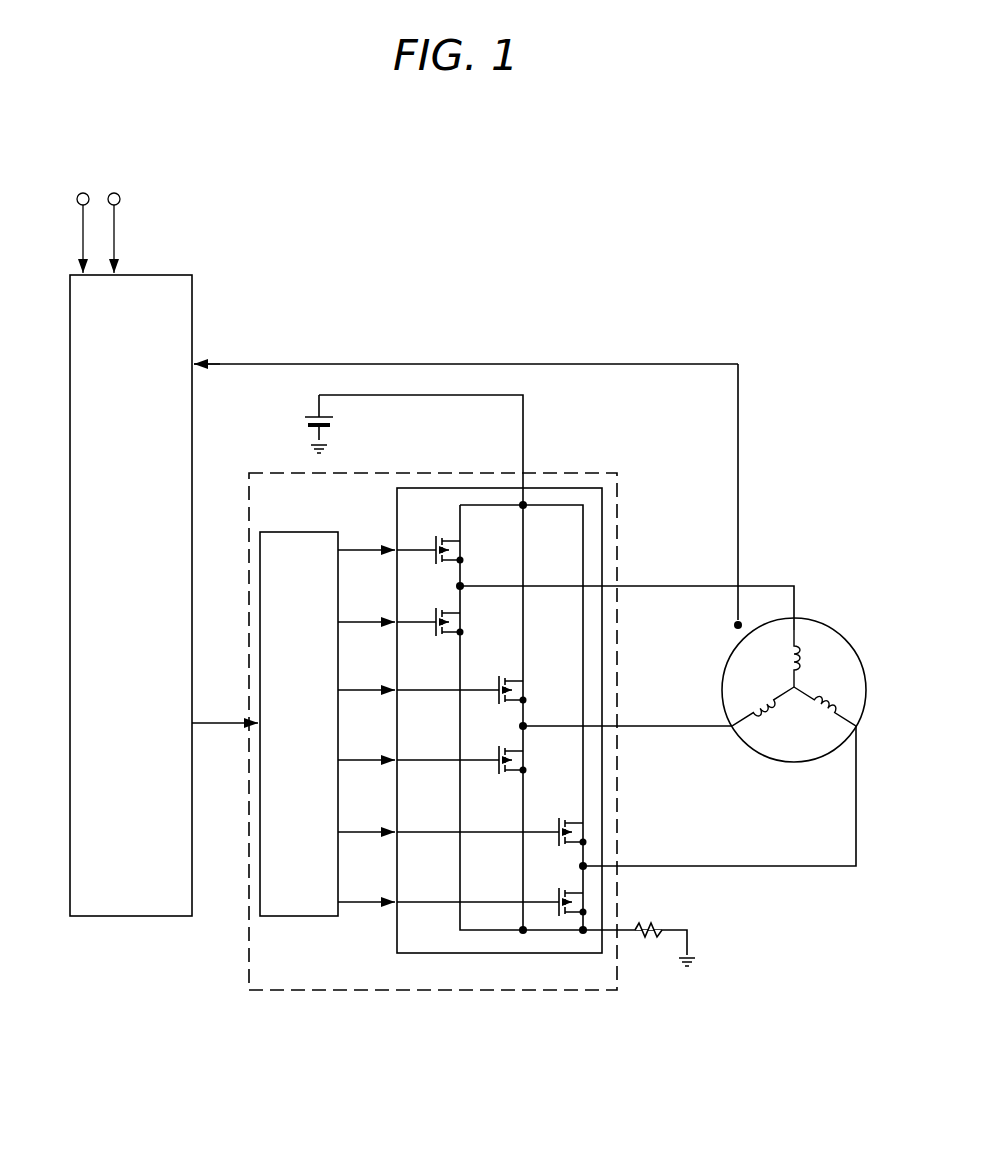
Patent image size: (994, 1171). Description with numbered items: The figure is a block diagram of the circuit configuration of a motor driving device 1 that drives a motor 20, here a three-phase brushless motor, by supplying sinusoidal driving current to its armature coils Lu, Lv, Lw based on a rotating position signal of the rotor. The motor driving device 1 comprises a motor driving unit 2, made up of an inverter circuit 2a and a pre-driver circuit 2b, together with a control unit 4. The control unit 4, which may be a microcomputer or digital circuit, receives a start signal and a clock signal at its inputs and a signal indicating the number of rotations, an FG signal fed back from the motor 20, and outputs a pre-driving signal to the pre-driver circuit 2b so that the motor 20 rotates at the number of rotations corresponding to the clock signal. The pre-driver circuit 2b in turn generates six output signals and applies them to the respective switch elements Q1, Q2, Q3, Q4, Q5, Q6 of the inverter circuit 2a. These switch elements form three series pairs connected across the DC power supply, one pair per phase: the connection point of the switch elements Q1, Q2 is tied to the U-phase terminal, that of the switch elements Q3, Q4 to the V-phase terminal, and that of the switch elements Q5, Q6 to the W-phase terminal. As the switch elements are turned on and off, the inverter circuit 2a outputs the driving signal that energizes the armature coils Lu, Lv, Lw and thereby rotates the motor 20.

The motor driving device 1 is at (180, 151).
The motor driving unit 2 is at (459, 468).
The inverter circuit 2a is at (558, 487).
The pre-driver circuit 2b is at (295, 531).
The control unit 4 is at (173, 917).
The motor 20 is at (813, 618).
The switch element Q1 is at (439, 537).
The switch element Q2 is at (439, 611).
The switch element Q3 is at (501, 678).
The switch element Q4 is at (501, 750).
The switch element Q5 is at (561, 819).
The switch element Q6 is at (561, 891).
The armature coil Lu is at (780, 651).
The armature coil Lv is at (765, 718).
The armature coil Lw is at (826, 718).